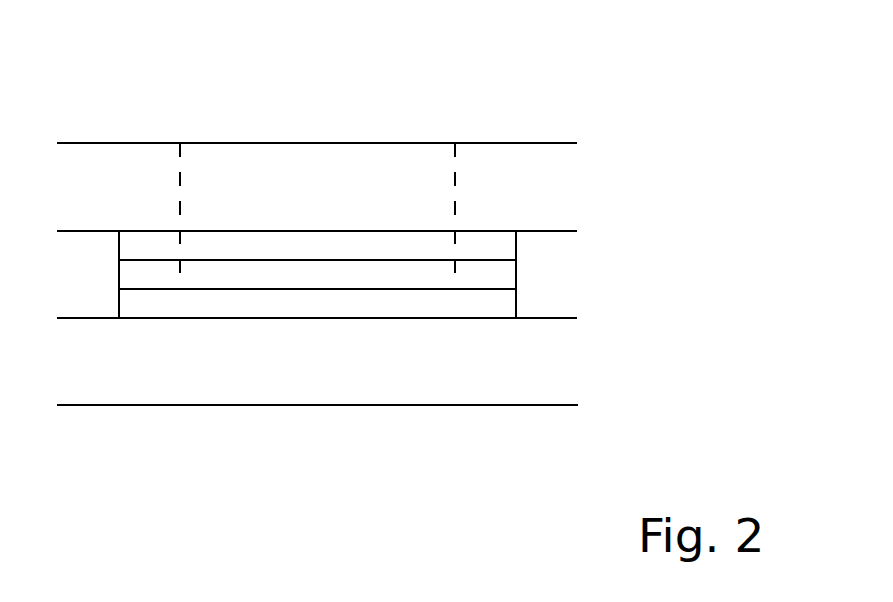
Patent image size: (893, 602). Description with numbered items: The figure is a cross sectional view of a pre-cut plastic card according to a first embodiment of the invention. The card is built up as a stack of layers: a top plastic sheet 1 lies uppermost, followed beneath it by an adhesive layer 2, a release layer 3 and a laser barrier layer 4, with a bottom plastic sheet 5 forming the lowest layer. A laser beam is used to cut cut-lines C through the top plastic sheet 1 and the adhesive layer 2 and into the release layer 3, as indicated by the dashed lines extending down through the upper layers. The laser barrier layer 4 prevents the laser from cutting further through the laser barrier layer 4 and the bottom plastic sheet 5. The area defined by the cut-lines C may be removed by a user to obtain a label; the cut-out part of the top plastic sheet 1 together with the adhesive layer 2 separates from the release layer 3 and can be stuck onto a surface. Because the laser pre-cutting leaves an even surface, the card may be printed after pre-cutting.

The top plastic sheet 1 is at (517, 182).
The adhesive layer 2 is at (513, 245).
The release layer 3 is at (505, 275).
The laser barrier layer 4 is at (503, 306).
The bottom plastic sheet 5 is at (455, 375).
The cut-lines C is at (180, 177).